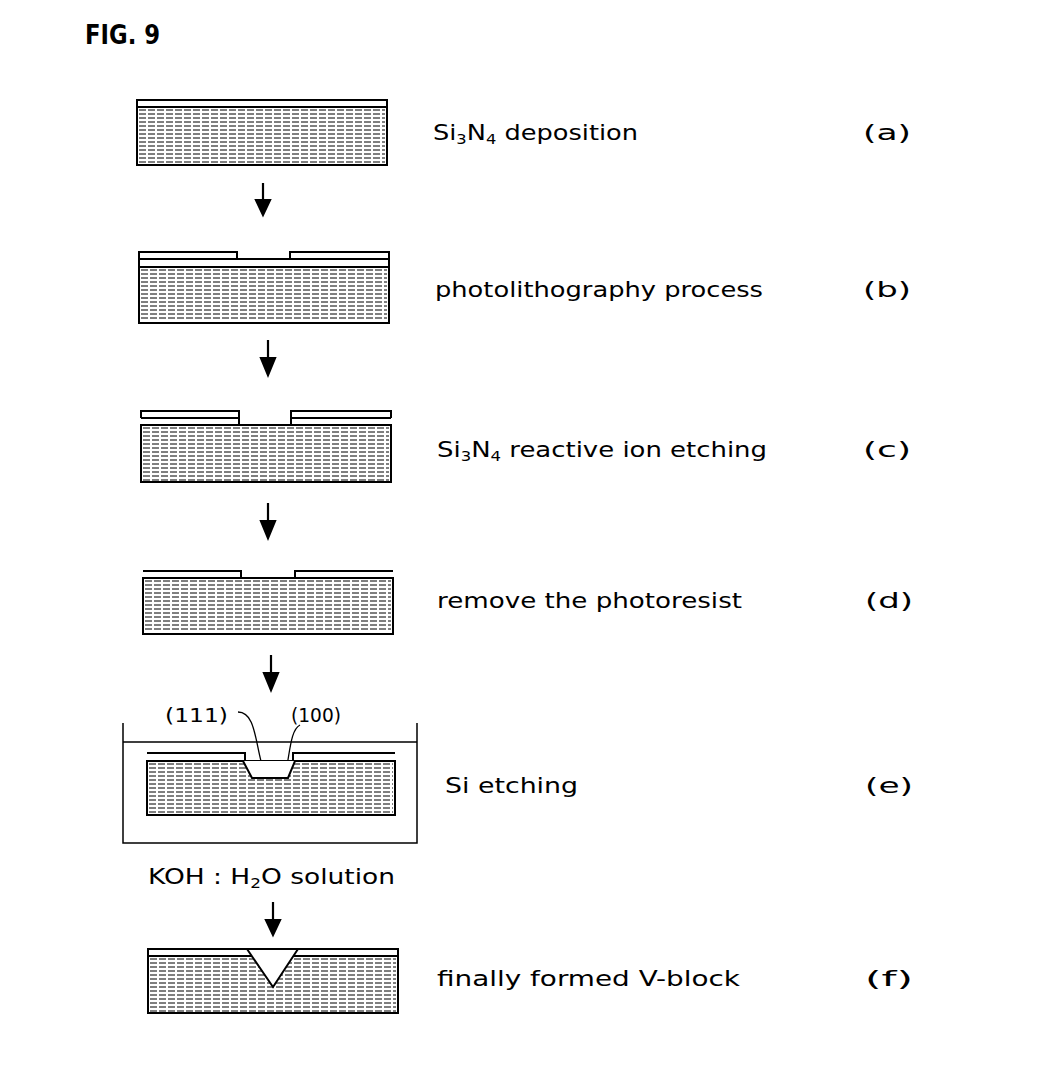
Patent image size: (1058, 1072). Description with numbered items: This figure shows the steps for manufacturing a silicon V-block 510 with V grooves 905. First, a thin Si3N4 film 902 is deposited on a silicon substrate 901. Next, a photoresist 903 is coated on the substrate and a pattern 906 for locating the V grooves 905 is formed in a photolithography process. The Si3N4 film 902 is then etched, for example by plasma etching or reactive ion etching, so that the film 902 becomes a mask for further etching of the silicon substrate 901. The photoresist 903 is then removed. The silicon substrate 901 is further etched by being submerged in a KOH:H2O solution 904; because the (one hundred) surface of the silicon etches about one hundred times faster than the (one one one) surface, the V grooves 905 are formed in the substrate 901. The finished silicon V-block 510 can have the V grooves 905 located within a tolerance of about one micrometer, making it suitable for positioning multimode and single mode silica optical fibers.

The silicon substrate 901 is at (387, 128).
The Si3N4 film 902 is at (383, 100).
The photoresist 903 is at (389, 257).
The KOH:H2O solution 904 is at (413, 826).
The V grooves 905 is at (283, 960).
The pattern 906 is at (252, 252).
The silicon V-block 510 is at (128, 949).